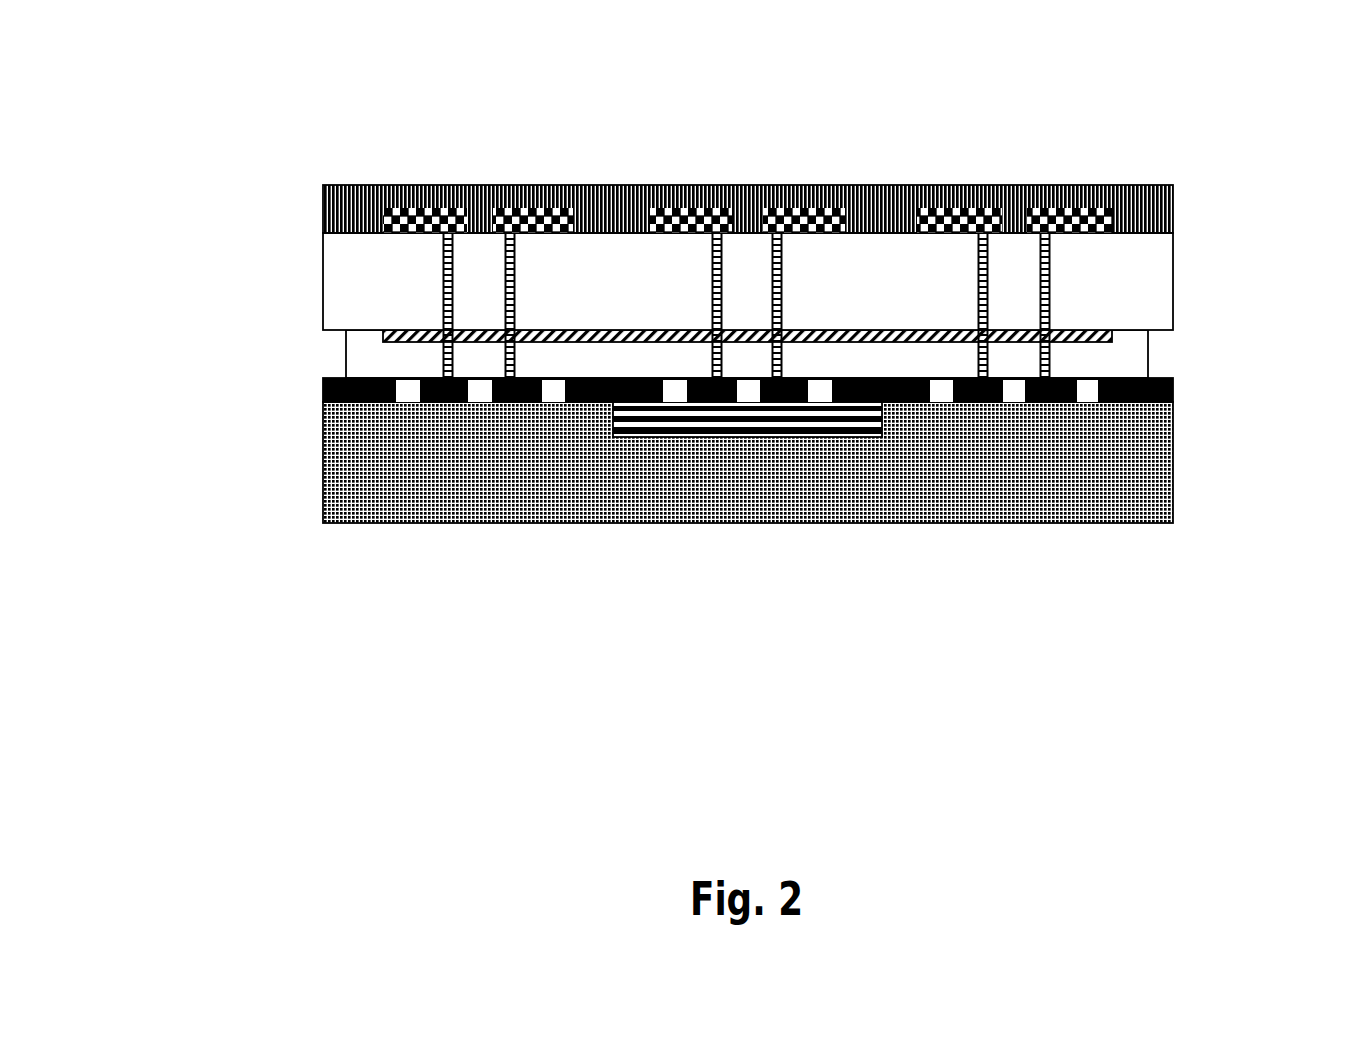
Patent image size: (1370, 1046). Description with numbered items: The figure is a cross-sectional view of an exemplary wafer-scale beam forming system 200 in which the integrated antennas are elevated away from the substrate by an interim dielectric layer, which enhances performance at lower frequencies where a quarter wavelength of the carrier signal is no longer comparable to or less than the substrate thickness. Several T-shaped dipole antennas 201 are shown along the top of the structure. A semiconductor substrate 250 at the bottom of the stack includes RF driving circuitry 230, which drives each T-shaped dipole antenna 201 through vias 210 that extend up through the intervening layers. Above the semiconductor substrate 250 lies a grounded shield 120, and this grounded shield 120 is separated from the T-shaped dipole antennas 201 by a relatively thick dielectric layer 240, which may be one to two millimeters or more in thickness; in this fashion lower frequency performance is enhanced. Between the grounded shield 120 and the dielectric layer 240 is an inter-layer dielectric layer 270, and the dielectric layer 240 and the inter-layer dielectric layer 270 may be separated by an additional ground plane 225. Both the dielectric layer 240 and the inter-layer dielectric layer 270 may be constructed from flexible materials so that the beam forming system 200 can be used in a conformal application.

The beam forming system 200 is at (760, 42).
The T-shaped dipole antennas 201 is at (525, 187).
The vias 210 is at (698, 305).
The dielectric layer 240 is at (330, 282).
The ground plane 225 is at (1147, 278).
The inter-layer dielectric layer 270 is at (340, 353).
The RF driving circuitry 230 is at (820, 417).
The grounded shield 120 is at (1173, 387).
The semiconductor substrate 250 is at (320, 492).